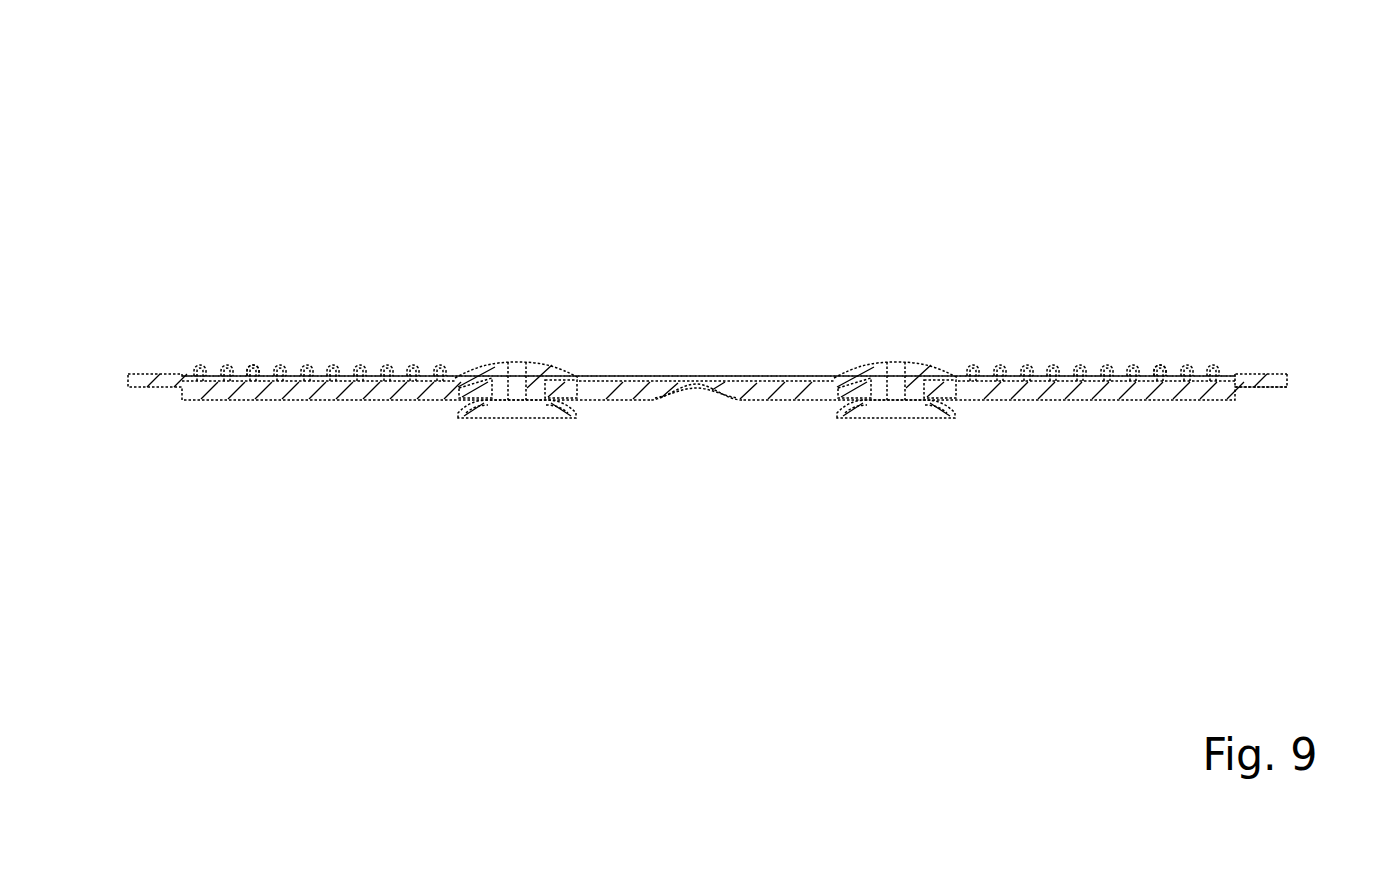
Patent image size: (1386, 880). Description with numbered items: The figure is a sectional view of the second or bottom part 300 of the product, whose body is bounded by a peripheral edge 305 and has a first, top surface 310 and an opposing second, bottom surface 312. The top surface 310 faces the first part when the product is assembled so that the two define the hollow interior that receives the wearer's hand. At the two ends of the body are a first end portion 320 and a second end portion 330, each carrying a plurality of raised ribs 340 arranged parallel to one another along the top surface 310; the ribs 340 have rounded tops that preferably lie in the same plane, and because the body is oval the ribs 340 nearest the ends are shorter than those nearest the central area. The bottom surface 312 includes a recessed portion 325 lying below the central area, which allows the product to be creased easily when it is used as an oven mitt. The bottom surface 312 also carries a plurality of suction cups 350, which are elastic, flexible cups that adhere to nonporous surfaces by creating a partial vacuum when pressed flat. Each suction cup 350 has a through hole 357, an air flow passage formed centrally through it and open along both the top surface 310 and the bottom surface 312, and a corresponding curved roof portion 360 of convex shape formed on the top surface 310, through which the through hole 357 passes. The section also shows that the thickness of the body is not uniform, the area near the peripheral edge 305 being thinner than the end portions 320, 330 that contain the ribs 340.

The second (bottom) part 300 is at (753, 307).
The peripheral edge 305 is at (1300, 386).
The first (top) surface 310 is at (243, 376).
The second (bottom) surface 312 is at (272, 402).
The first end portion 320 is at (318, 380).
The recessed portion 325 is at (696, 384).
The second end portion 330 is at (1150, 380).
The raised ribs 340 is at (1053, 374).
The suction cups 350 is at (939, 407).
The through hole 357 is at (897, 374).
The curved roof portion 360 is at (878, 376).